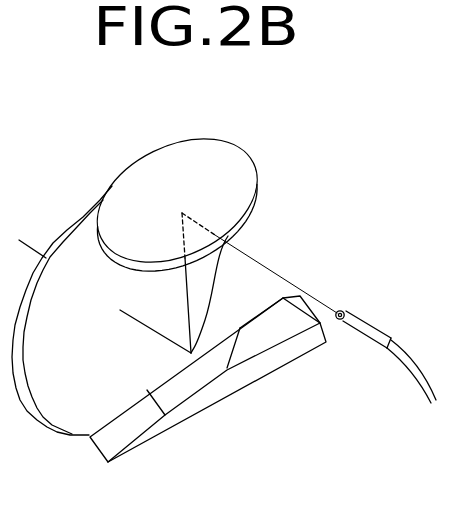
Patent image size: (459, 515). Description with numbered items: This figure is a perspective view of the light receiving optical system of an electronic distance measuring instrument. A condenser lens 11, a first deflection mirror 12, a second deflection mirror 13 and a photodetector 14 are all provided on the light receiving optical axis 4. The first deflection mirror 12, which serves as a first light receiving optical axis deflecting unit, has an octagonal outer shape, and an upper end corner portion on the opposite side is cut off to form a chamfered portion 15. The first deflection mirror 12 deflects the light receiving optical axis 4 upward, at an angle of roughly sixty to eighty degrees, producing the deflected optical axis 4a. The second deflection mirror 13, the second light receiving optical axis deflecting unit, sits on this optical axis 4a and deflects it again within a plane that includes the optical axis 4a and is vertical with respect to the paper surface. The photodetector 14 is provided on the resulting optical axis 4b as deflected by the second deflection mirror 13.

The condenser lens 11 is at (55, 242).
The first deflection mirror 12 is at (238, 402).
The second deflection mirror 13 is at (262, 187).
The photodetector 14 is at (363, 317).
The chamfered portion 15 is at (270, 333).
The light receiving optical axis 4 is at (146, 325).
The optical axis 4a is at (186, 302).
The optical axis 4b is at (265, 263).